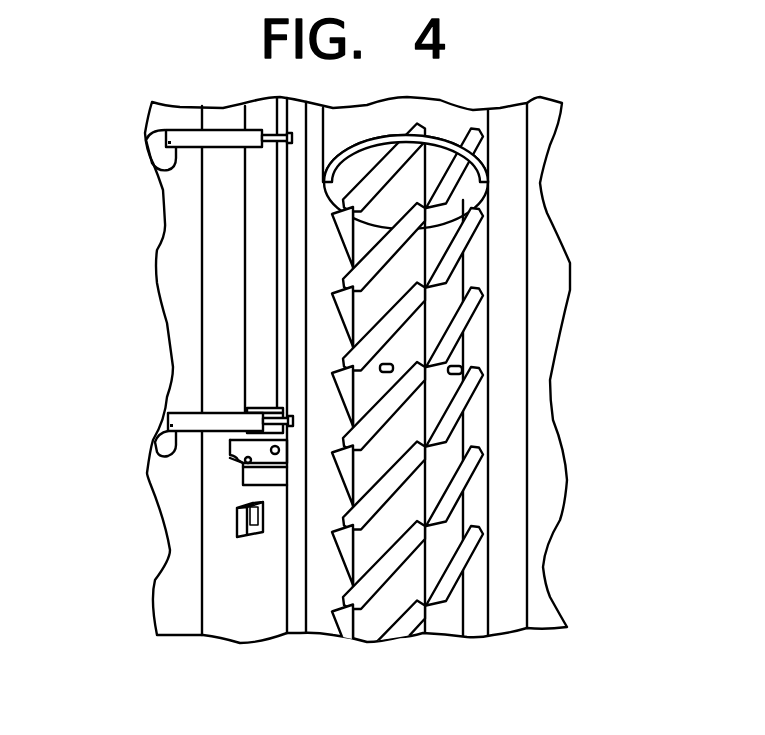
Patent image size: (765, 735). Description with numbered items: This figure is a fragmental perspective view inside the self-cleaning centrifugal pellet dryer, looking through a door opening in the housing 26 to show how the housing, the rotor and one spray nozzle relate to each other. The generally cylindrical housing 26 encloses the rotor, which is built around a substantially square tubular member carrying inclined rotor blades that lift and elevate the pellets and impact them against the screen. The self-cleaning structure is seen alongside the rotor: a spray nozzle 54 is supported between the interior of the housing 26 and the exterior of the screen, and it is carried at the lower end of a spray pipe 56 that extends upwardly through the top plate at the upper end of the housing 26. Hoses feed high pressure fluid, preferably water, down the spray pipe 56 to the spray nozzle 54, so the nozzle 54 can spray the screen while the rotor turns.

The housing 26 is at (527, 245).
The spray nozzle 54 is at (237, 462).
The spray pipe 56 is at (257, 263).